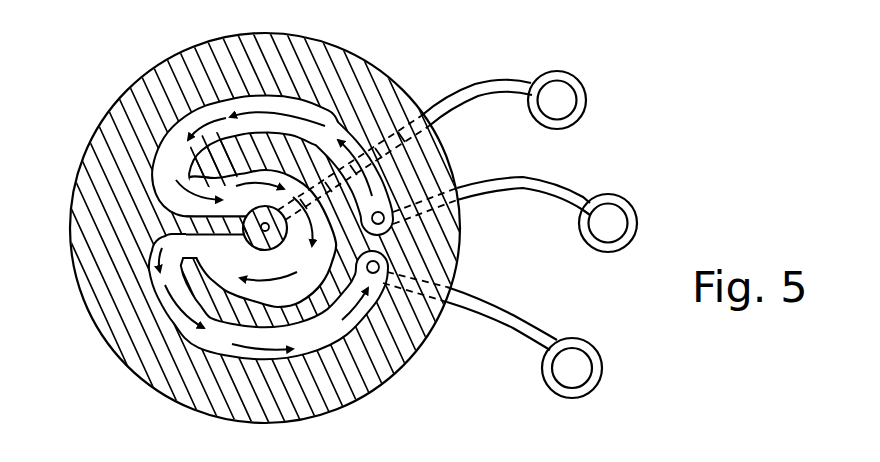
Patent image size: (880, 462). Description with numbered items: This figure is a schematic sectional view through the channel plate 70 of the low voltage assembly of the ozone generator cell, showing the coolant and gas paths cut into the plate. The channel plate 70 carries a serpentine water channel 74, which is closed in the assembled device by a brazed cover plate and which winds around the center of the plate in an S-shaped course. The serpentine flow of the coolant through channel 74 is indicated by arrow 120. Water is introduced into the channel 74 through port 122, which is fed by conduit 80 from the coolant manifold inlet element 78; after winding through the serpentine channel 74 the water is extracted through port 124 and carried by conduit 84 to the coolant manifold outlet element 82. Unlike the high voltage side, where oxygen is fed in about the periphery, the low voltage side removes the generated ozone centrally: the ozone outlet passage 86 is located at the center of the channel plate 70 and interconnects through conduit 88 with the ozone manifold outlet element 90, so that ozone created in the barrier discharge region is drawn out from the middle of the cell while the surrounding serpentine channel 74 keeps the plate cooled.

The channel plate 70 is at (172, 64).
The arrow 120 is at (163, 168).
The serpentine water channel 74 is at (170, 192).
The ozone outlet passage 86 is at (253, 239).
The port 122 is at (392, 232).
The port 124 is at (405, 251).
The conduit 88 is at (467, 84).
The ozone manifold outlet element 90 is at (587, 108).
The conduit 80 is at (488, 178).
The coolant manifold inlet element 78 is at (620, 194).
The conduit 84 is at (533, 320).
The coolant manifold outlet element 82 is at (602, 358).